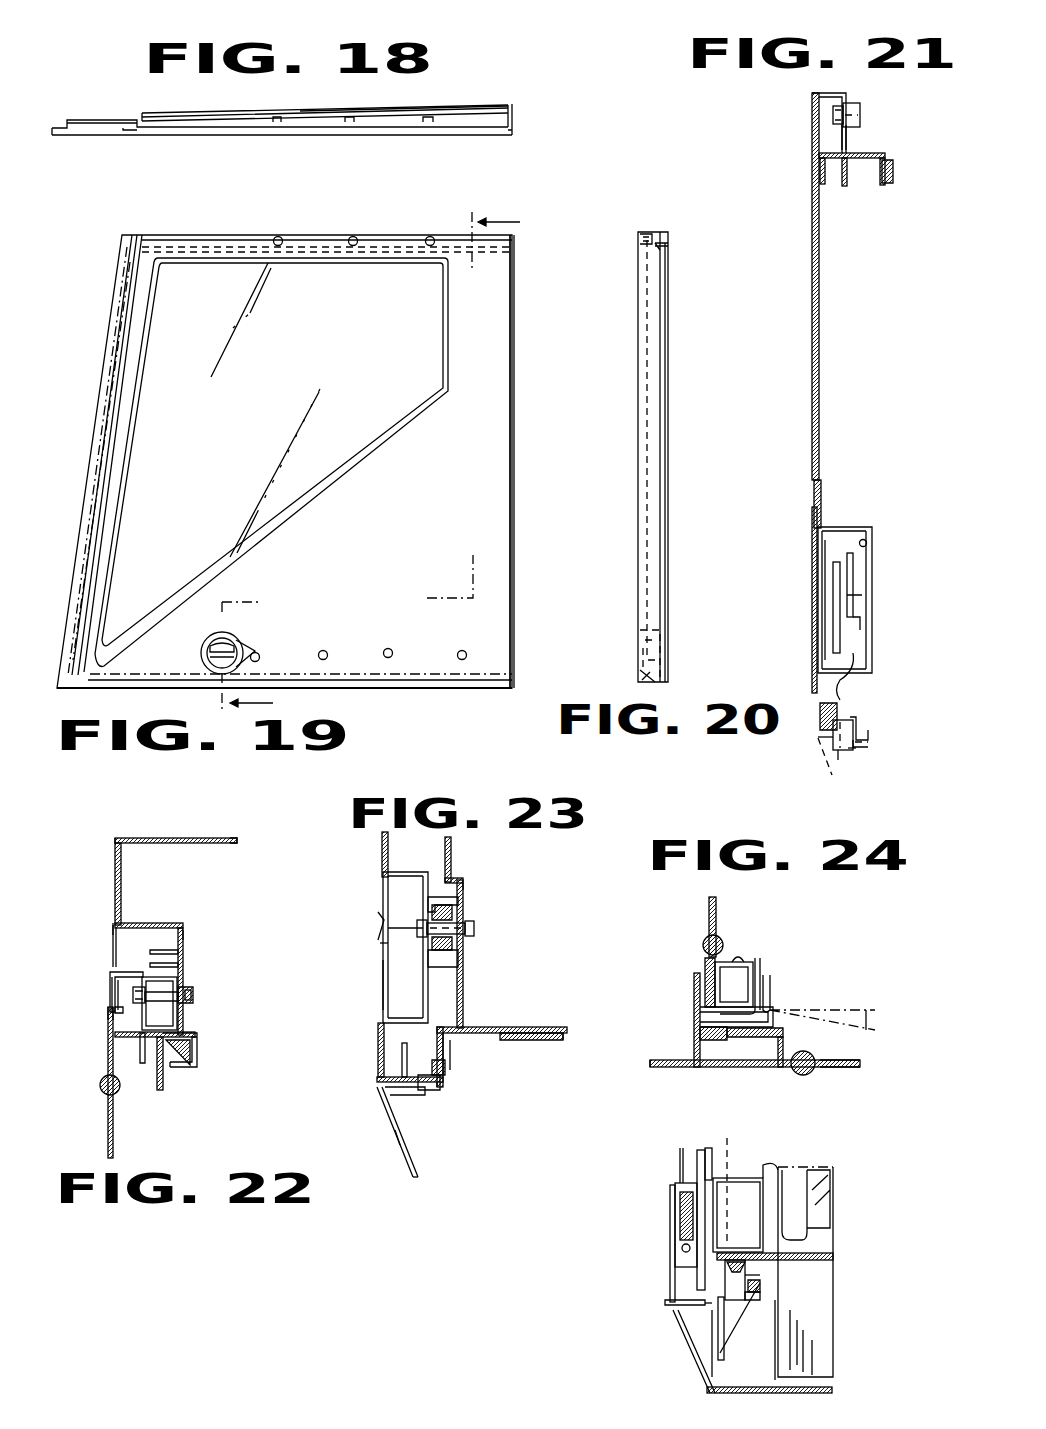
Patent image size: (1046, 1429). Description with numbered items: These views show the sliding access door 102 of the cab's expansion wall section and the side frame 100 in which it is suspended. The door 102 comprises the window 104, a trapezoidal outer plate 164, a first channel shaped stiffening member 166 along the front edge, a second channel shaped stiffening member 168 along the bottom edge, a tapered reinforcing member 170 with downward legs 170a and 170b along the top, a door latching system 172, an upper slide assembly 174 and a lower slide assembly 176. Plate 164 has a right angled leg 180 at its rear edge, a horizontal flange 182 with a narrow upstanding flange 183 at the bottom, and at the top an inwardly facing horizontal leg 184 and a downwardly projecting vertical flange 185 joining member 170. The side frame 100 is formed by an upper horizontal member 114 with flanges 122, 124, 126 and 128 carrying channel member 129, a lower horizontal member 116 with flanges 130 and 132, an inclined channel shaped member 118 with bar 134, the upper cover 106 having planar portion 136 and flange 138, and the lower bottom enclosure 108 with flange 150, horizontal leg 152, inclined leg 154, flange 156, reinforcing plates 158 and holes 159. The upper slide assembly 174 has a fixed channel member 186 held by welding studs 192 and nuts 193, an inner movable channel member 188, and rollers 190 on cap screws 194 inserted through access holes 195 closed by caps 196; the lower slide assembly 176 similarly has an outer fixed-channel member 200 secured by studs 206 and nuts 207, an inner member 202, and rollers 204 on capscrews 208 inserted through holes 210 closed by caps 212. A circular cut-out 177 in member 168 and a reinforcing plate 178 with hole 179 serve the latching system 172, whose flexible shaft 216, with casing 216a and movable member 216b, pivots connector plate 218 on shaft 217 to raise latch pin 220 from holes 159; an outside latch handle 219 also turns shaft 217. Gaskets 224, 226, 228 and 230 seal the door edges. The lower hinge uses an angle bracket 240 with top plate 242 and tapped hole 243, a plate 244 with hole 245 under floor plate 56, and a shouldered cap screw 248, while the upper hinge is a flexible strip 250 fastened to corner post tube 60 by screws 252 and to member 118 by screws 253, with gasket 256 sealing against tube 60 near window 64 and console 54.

In FIG. 23, the right hand operator's console 54 is at (455, 845).
In FIG. 23, the horizontal floor plate 56 is at (563, 1042).
In FIG. 25, the horizontal floor plate 56 is at (836, 1258).
In FIG. 24, the tubular member 60 is at (728, 962).
In FIG. 25, the tubular member 60 is at (760, 1175).
In FIG. 24, the gasketed window 64 is at (718, 904).
In FIG. 25, the gasketed window 64 is at (830, 1172).
In FIG. 22, the vertical side frame 100 is at (113, 838).
In FIG. 23, the vertical side frame 100 is at (390, 1137).
In FIG. 18, the access door 102 is at (143, 138).
In FIG. 19, the access door 102 is at (118, 260).
In FIG. 20, the access door 102 is at (666, 372).
In FIG. 21, the access door 102 is at (811, 149).
In FIG. 22, the access door 102 is at (101, 1082).
In FIG. 23, the access door 102 is at (376, 965).
In FIG. 24, the access door 102 is at (668, 1068).
In FIG. 19, the window 104 is at (155, 334).
In FIG. 22, the window 104 is at (114, 1136).
In FIG. 24, the window 104 is at (861, 1062).
In FIG. 22, the upper cover 106 is at (237, 838).
In FIG. 23, the lower bottom enclosure 108 is at (418, 1177).
In FIG. 25, the lower bottom enclosure 108 is at (710, 1362).
In FIG. 22, the upper horizontal member 114 is at (162, 925).
In FIG. 23, the lower horizontal member 116 is at (555, 1033).
In FIG. 24, the inclined channel shaped member 118 is at (777, 999).
In FIG. 25, the inclined channel shaped member 118 is at (734, 1179).
In FIG. 22, the outer upstanding flange 122 is at (122, 893).
In FIG. 22, the horizontal leg 124 is at (135, 923).
In FIG. 22, the vertical leg 126 is at (184, 932).
In FIG. 22, the horizontal flange 128 is at (193, 1037).
In FIG. 22, the channel shaped member 129 is at (197, 1058).
In FIG. 23, the horizontal flange 130 is at (515, 1027).
In FIG. 23, the downwardly projecting flange 132 is at (450, 1050).
In FIG. 24, the bar 134 is at (693, 983).
In FIG. 25, the bar 134 is at (682, 1150).
In FIG. 22, the main planar portion 136 is at (190, 838).
In FIG. 22, the longitudinal flange 138 is at (112, 920).
In FIG. 23, the vertical upstanding flange 150 is at (447, 1075).
In FIG. 23, the upper horizontal leg 152 is at (425, 1092).
In FIG. 21, the inclined leg 154 is at (818, 745).
In FIG. 23, the inclined leg 154 is at (392, 1152).
In FIG. 25, the inclined leg 154 is at (705, 1384).
In FIG. 25, the lower horizontal flange 156 is at (832, 1390).
In FIG. 21, the reinforcing plates 158 is at (860, 750).
In FIG. 23, the reinforcing plates 158 is at (418, 1097).
In FIG. 21, the vertical holes 159 is at (850, 755).
In FIG. 18, the outer plate 164 is at (318, 136).
In FIG. 19, the outer plate 164 is at (497, 445).
In FIG. 21, the outer plate 164 is at (820, 480).
In FIG. 22, the outer plate 164 is at (110, 1059).
In FIG. 23, the outer plate 164 is at (382, 858).
In FIG. 24, the outer plate 164 is at (770, 1068).
In FIG. 25, the outer plate 164 is at (670, 1232).
In FIG. 24, the first channel shaped stiffening member 166 is at (712, 1068).
In FIG. 25, the first channel shaped stiffening member 166 is at (698, 1185).
In FIG. 20, the second channel shaped stiffening member 168 is at (658, 628).
In FIG. 21, the second channel shaped stiffening member 168 is at (840, 526).
In FIG. 23, the second channel shaped stiffening member 168 is at (410, 872).
In FIG. 18, the tapered reinforcing member 170 is at (487, 113).
In FIG. 20, the tapered reinforcing member 170 is at (662, 236).
In FIG. 21, the tapered reinforcing member 170 is at (870, 153).
In FIG. 22, the tapered reinforcing member 170 is at (160, 1085).
In FIG. 21, the inwardly facing leg 170a is at (875, 188).
In FIG. 21, the outwardly facing leg 170b is at (824, 185).
In FIG. 21, the door latching system 172 is at (810, 566).
In FIG. 22, the upper slide assembly 174 is at (247, 910).
In FIG. 23, the lower slide assembly 176 is at (470, 883).
In FIG. 21, the circular cut-out 177 is at (866, 543).
In FIG. 21, the reinforcing plate 178 is at (820, 735).
In FIG. 21, the hole 179 is at (838, 722).
In FIG. 18, the right angled leg 180 is at (520, 113).
In FIG. 20, the right angled leg 180 is at (657, 431).
In FIG. 20, the right angled horizontal flange 182 is at (670, 658).
In FIG. 21, the right angled horizontal flange 182 is at (832, 748).
In FIG. 23, the right angled horizontal flange 182 is at (382, 1078).
In FIG. 25, the right angled horizontal flange 182 is at (672, 1293).
In FIG. 20, the narrow upstanding flange 183 is at (672, 676).
In FIG. 21, the narrow upstanding flange 183 is at (870, 716).
In FIG. 23, the narrow upstanding flange 183 is at (409, 1052).
In FIG. 18, the inwardly facing horizontal leg 184 is at (510, 130).
In FIG. 21, the inwardly facing horizontal leg 184 is at (817, 93).
In FIG. 22, the inwardly facing horizontal leg 184 is at (128, 965).
In FIG. 21, the downwardly projecting vertical flange 185 is at (855, 140).
In FIG. 22, the downwardly projecting vertical flange 185 is at (120, 1033).
In FIG. 22, the fixed channel member 186 is at (163, 955).
In FIG. 22, the inner movable channel member 188 is at (153, 967).
In FIG. 18, the rollers 190 is at (278, 117).
In FIG. 21, the rollers 190 is at (858, 115).
In FIG. 22, the rollers 190 is at (176, 1015).
In FIG. 22, the welding studs 192 is at (193, 1000).
In FIG. 22, the nuts 193 is at (191, 993).
In FIG. 21, the cap screws 194 is at (832, 118).
In FIG. 22, the cap screws 194 is at (132, 995).
In FIG. 22, the access holes 195 is at (115, 985).
In FIG. 19, the spring type closure caps 196 is at (353, 237).
In FIG. 22, the spring type closure caps 196 is at (118, 1010).
In FIG. 23, the outer fixed-channel member 200 is at (458, 900).
In FIG. 23, the inner movable channel member 202 is at (455, 910).
In FIG. 23, the rollers 204 is at (456, 962).
In FIG. 23, the welding studs 206 is at (476, 930).
In FIG. 23, the nuts 207 is at (455, 945).
In FIG. 23, the capscrews 208 is at (385, 930).
In FIG. 23, the access holes 210 is at (378, 922).
In FIG. 19, the spring type closure caps 212 is at (460, 652).
In FIG. 23, the spring type closure caps 212 is at (385, 945).
In FIG. 25, the flexible shaft 216 is at (675, 1192).
In FIG. 25, the stationary casing 216a is at (680, 1212).
In FIG. 25, the inner flexible movable member 216b is at (680, 1252).
In FIG. 21, the shaft 217 is at (832, 598).
In FIG. 21, the connector plate 218 is at (855, 565).
In FIG. 19, the latch handle 219 is at (226, 638).
In FIG. 21, the latch pin 220 is at (838, 758).
In FIG. 18, the gasket 224 is at (450, 102).
In FIG. 19, the gasket 224 is at (163, 250).
In FIG. 21, the gasket 224 is at (892, 177).
In FIG. 22, the gasket 224 is at (178, 1063).
In FIG. 19, the gasket 226 is at (403, 684).
In FIG. 23, the gasket 226 is at (442, 1086).
In FIG. 25, the gasket 226 is at (664, 1299).
In FIG. 19, the gasket 228 is at (118, 363).
In FIG. 24, the gasket 228 is at (705, 1037).
In FIG. 25, the gasket 228 is at (708, 1150).
In FIG. 18, the gasket 230 is at (512, 105).
In FIG. 20, the gasket 230 is at (669, 256).
In FIG. 25, the angle bracket 240 is at (718, 1327).
In FIG. 25, the top plate 242 is at (760, 1288).
In FIG. 25, the tapped hole 243 is at (752, 1295).
In FIG. 25, the plate 244 is at (727, 1273).
In FIG. 25, the hole 245 is at (746, 1270).
In FIG. 25, the shouldered cap screw 248 is at (755, 1298).
In FIG. 24, the flexible stainless steel strip 250 is at (760, 962).
In FIG. 24, the screws 252 is at (746, 958).
In FIG. 24, the screws 253 is at (773, 978).
In FIG. 24, the gasket 256 is at (705, 975).
In FIG. 25, the gasket 256 is at (750, 1165).